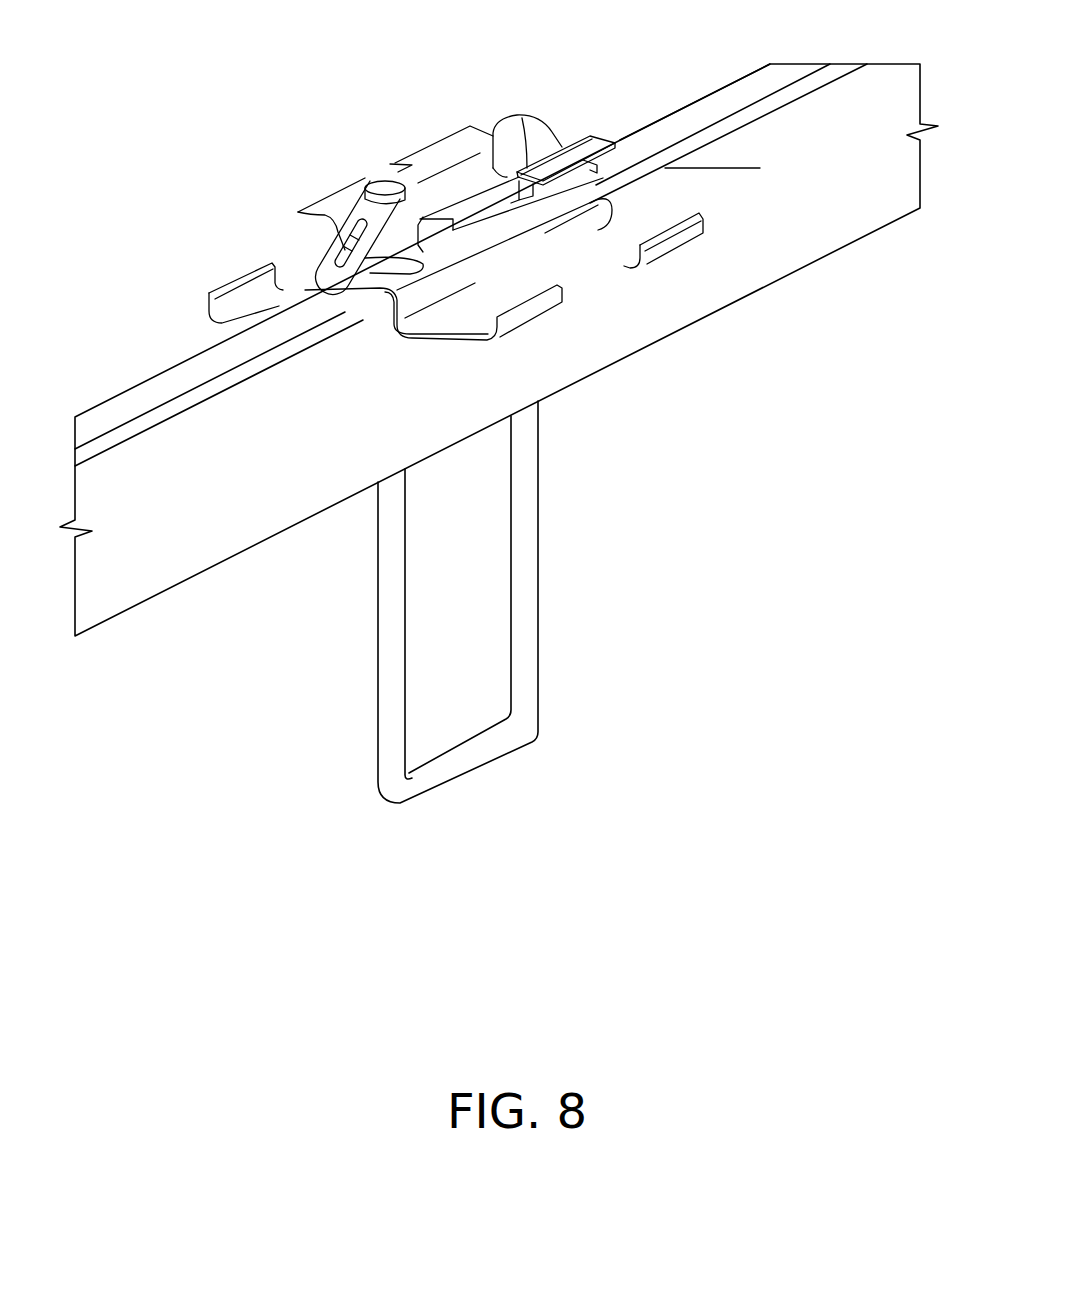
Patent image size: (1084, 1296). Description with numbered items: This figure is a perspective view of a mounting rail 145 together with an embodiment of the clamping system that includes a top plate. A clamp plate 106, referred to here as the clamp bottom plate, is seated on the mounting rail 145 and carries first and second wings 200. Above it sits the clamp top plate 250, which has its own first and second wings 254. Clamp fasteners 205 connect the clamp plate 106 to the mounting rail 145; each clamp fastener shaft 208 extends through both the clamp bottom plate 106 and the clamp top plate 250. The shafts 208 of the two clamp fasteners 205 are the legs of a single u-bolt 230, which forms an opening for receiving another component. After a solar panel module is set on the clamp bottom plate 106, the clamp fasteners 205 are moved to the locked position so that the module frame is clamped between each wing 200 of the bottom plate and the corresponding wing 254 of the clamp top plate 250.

The clamp plate 106 is at (668, 168).
The mounting rail 145 is at (150, 557).
The wing of the clamp bottom plate 200 is at (253, 273).
The clamp fastener 205 is at (372, 187).
The clamp fastener shaft 208 is at (377, 728).
The u-bolt 230 is at (494, 785).
The clamp top plate 250 is at (598, 136).
The wing of the clamp top plate 254 is at (333, 200).